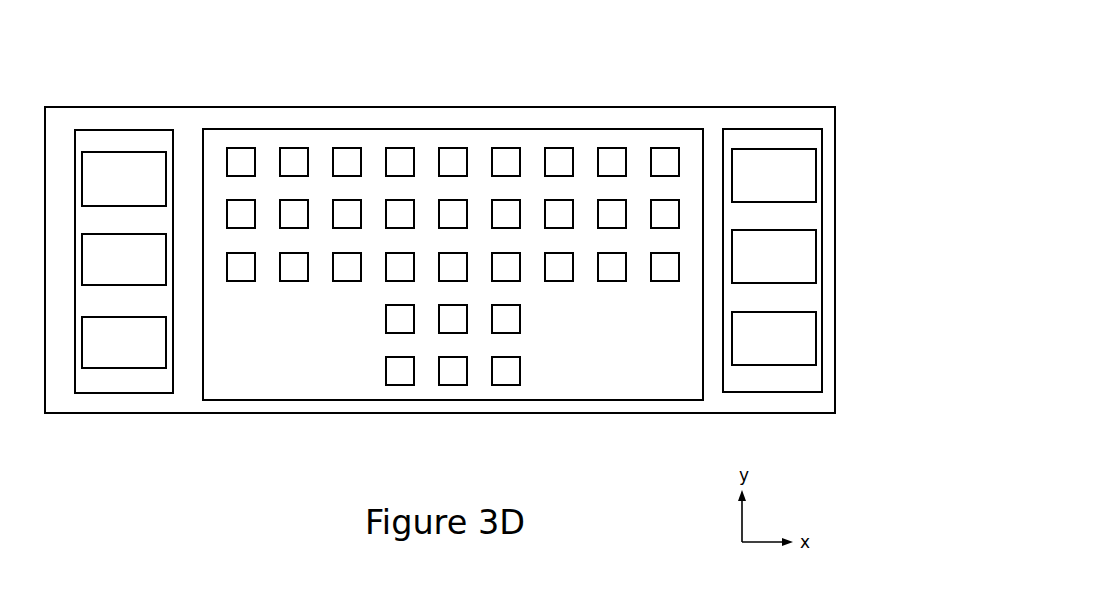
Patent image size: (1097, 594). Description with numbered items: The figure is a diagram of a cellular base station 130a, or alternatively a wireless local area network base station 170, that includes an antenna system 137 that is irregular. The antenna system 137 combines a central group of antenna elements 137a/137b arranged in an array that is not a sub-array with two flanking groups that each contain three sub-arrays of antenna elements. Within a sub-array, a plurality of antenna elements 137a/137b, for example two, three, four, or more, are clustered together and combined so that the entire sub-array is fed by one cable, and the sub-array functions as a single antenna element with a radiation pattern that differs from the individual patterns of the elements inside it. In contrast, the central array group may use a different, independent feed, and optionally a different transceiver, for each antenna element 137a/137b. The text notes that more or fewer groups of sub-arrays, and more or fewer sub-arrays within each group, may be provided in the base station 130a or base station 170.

The cellular base station 130a is at (440, 207).
The wireless local area network base station 170 is at (440, 260).
The antenna system 137 is at (448, 254).
The antenna element 137a is at (465, 118).
The antenna element 137b is at (396, 162).